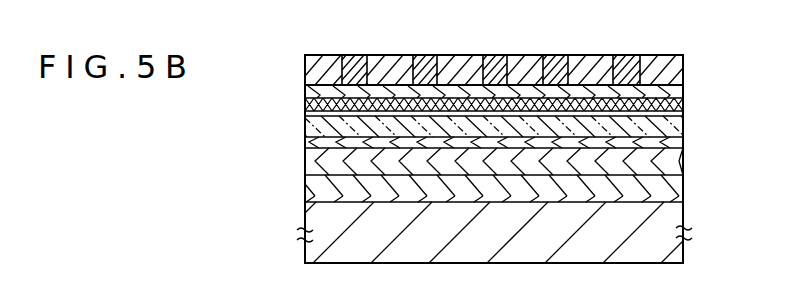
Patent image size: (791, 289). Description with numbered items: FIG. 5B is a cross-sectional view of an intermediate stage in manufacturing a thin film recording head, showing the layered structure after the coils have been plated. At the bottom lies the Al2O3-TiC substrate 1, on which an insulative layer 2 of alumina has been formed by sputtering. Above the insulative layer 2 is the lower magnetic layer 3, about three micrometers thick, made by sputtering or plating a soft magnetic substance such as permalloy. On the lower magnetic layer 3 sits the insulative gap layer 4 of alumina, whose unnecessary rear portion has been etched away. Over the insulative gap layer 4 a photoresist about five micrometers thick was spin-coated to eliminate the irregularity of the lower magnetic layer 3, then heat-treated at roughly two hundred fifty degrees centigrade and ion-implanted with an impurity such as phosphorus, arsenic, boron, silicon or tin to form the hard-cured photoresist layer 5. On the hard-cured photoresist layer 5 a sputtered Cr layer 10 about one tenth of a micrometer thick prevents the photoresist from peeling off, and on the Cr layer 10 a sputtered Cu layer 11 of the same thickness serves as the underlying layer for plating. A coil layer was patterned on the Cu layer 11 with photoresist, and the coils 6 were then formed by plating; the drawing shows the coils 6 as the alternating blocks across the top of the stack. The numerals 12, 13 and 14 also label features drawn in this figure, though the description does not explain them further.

The Al2O3-TiC substrate 1 is at (312, 207).
The insulative layer 2 is at (683, 188).
The lower magnetic layer 3 is at (305, 160).
The insulative gap layer 4 is at (683, 145).
The hard-cured photoresist layer 5 is at (305, 128).
The upper guide layer 14 is at (683, 118).
The Cr layer 10 is at (305, 104).
The Cu layer 11 is at (683, 92).
The electrode layer 13 is at (322, 55).
The coils 6 is at (585, 60).
The insulating film 12 is at (627, 60).